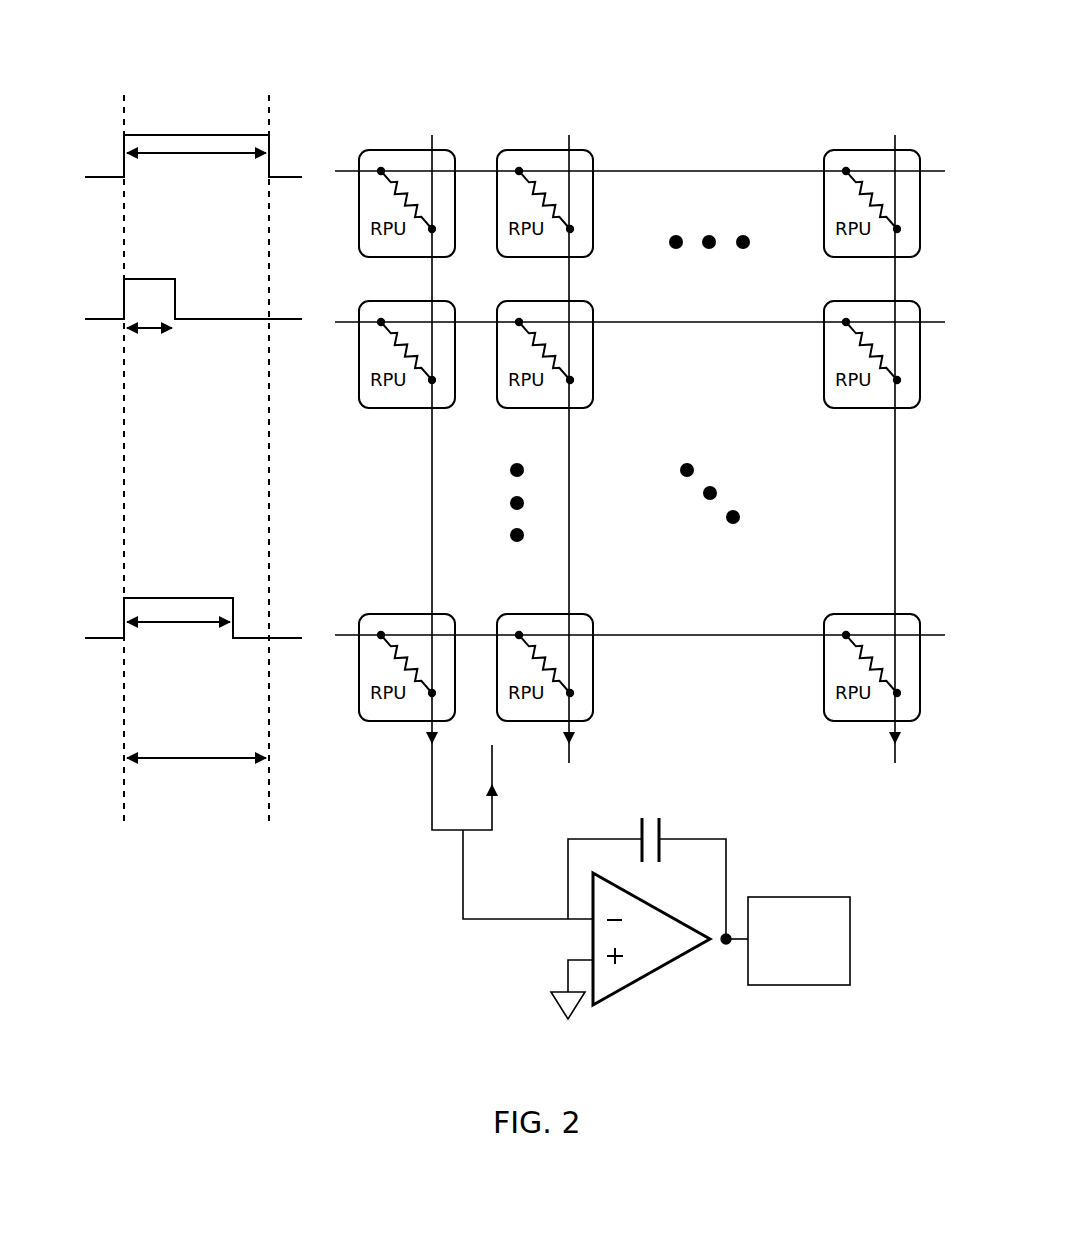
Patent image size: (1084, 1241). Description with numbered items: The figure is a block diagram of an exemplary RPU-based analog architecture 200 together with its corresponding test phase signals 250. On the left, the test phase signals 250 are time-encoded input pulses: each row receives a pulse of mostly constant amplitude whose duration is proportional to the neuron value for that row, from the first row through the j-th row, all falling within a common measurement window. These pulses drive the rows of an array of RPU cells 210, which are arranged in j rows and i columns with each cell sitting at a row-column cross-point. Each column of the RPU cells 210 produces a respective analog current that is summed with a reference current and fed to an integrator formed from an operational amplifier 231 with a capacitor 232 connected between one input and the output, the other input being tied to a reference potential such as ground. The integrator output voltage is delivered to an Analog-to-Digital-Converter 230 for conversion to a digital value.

The RPU-based analog architecture 200 is at (313, 53).
The test phase signals 250 is at (175, 68).
The RPU cells 210 is at (392, 128).
The Analog-to-Digital-Converter (ADC) 230 is at (807, 883).
The operational amplifier integrator 231 is at (662, 977).
The integrating capacitor C_int 232 is at (672, 767).